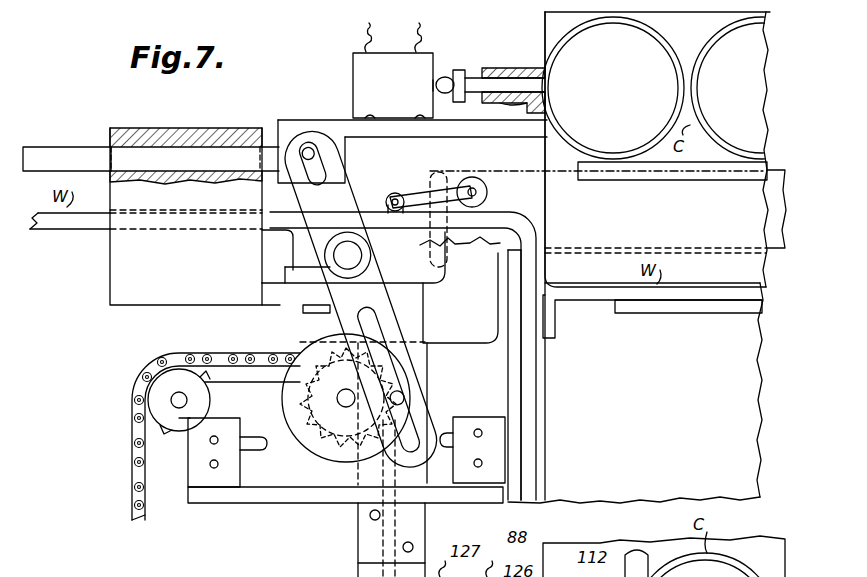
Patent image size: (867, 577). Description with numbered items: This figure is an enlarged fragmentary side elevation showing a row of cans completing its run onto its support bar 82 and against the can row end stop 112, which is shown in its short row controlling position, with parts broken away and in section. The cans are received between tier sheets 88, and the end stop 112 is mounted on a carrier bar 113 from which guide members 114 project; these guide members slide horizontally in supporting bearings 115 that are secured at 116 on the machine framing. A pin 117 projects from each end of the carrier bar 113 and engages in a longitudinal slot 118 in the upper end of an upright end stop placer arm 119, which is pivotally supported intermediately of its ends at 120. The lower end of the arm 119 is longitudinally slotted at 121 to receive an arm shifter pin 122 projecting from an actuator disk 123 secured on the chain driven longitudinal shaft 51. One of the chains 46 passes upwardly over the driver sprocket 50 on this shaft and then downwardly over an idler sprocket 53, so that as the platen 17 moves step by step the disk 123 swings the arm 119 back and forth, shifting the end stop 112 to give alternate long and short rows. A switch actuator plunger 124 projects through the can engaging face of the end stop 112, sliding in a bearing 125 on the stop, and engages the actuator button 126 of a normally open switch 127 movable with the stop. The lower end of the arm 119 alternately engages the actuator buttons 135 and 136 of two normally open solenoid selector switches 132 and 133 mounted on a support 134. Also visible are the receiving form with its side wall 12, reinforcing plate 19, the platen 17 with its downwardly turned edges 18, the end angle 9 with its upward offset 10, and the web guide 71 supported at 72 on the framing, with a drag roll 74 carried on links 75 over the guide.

The end angle 9 is at (543, 230).
The upward offset 10 is at (467, 220).
The side wall 12 is at (540, 372).
The platen 17 is at (657, 294).
The downwardly turned edge 18 is at (555, 330).
The reinforcing plate 19 is at (540, 395).
The chain 46 is at (132, 440).
The driver sprocket 50 is at (333, 437).
The longitudinal shaft 51 is at (342, 403).
The idler sprocket 53 is at (152, 392).
The horizontal guide 71 is at (75, 223).
The guide support 72 is at (297, 247).
The drag roll 74 is at (472, 184).
The link 75 is at (443, 193).
The support bar 82 is at (703, 173).
The tier sheet 88 is at (545, 15).
The can row end stop 112 is at (540, 36).
The carrier bar 113 is at (287, 137).
The guide member 114 is at (58, 152).
The supporting bearing 115 is at (137, 120).
The bearing securing point 116 is at (287, 298).
The pin 117 is at (313, 153).
The longitudinal slot 118 is at (327, 170).
The end stop placer arm 119 is at (343, 198).
The pivot 120 is at (352, 258).
The slot 121 is at (403, 380).
The arm shifter pin 122 is at (405, 398).
The actuator disk 123 is at (348, 460).
The switch actuator plunger 124 is at (540, 87).
The bearing 125 is at (500, 108).
The actuator button 126 is at (445, 73).
The switch 127 is at (385, 53).
The solenoid selector switch 132 is at (193, 477).
The solenoid selector switch 133 is at (497, 465).
The support 134 is at (295, 495).
The actuator button 135 is at (253, 453).
The actuator button 136 is at (450, 443).